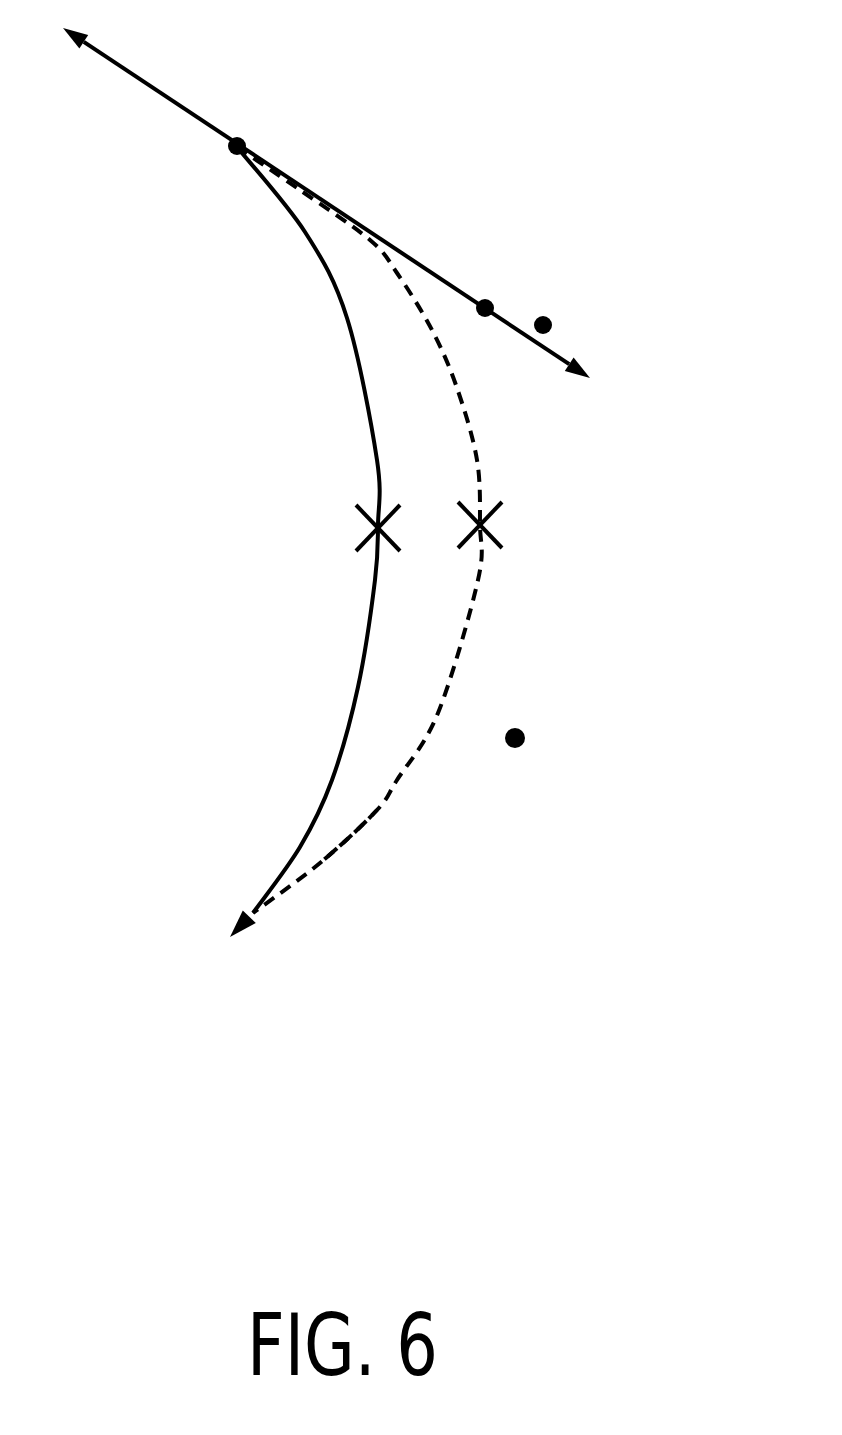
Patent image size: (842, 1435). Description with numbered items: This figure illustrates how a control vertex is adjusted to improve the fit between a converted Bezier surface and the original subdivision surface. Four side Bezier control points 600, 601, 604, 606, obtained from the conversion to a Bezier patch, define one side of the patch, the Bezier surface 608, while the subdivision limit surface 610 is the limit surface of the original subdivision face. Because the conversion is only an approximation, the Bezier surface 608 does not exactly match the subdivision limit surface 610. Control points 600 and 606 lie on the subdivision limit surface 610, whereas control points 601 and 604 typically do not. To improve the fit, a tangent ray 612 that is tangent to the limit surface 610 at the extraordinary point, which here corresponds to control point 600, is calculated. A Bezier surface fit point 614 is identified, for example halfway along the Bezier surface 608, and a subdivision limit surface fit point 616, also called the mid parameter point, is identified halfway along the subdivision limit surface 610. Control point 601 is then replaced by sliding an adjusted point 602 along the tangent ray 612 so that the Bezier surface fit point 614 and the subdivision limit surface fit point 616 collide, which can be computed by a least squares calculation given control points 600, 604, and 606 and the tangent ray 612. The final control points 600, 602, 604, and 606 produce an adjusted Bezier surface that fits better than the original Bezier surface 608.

The Bezier control point 600 is at (237, 140).
The Bezier control point 601 is at (550, 328).
The adjusted point 602 is at (490, 305).
The Bezier control point 604 is at (525, 732).
The Bezier control point 606 is at (252, 920).
The Bezier surface 608 is at (380, 810).
The subdivision limit surface 610 is at (305, 232).
The tangent ray 612 is at (395, 246).
The Bezier surface fit point 614 is at (375, 528).
The subdivision limit surface fit point 616 is at (485, 525).